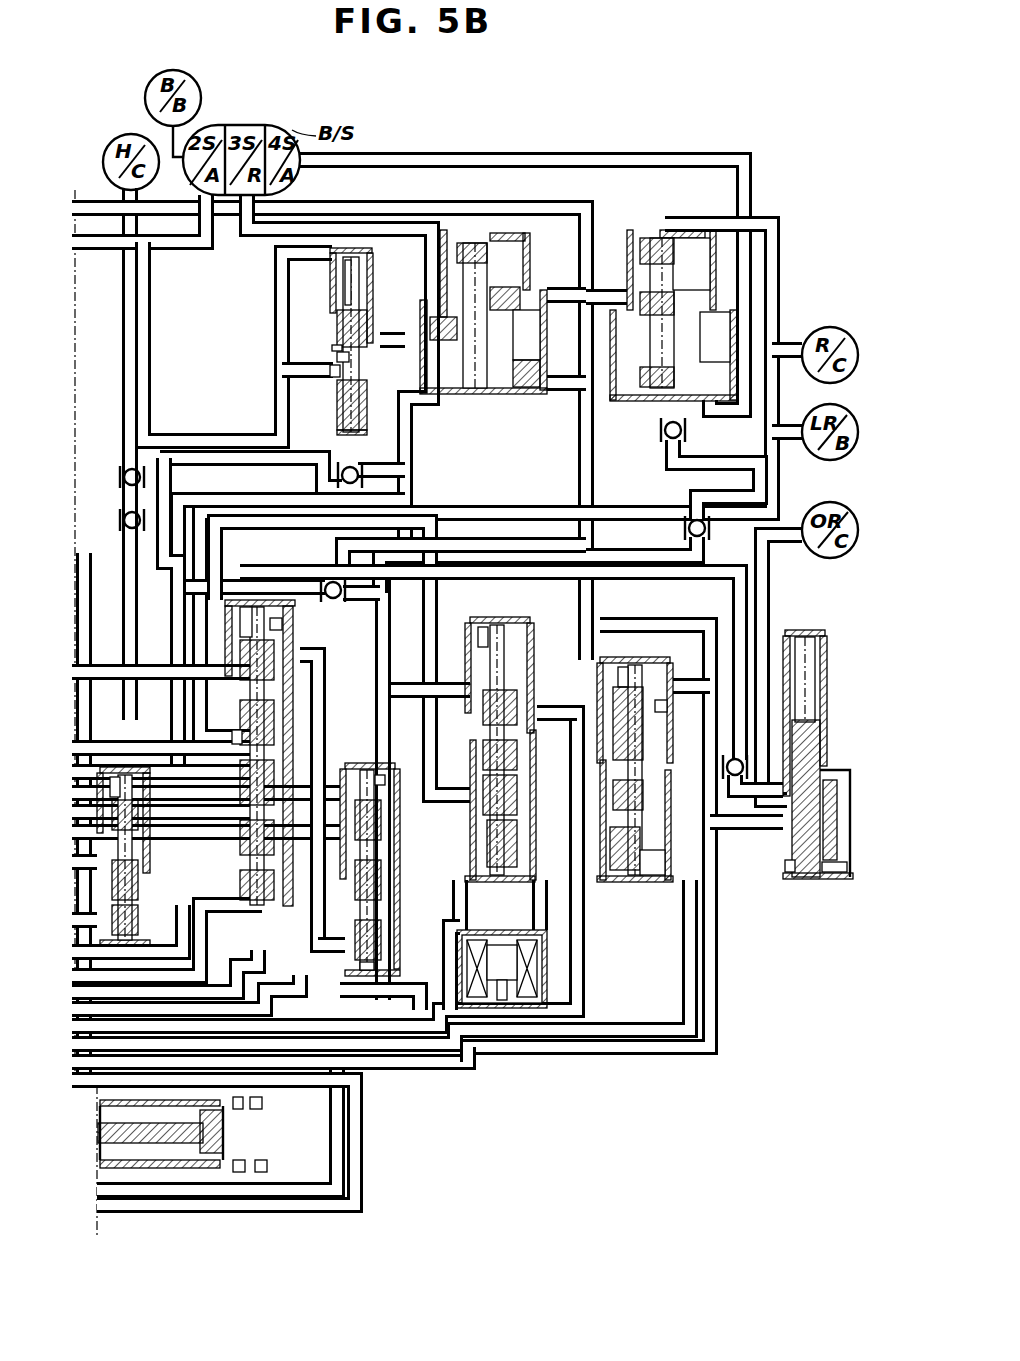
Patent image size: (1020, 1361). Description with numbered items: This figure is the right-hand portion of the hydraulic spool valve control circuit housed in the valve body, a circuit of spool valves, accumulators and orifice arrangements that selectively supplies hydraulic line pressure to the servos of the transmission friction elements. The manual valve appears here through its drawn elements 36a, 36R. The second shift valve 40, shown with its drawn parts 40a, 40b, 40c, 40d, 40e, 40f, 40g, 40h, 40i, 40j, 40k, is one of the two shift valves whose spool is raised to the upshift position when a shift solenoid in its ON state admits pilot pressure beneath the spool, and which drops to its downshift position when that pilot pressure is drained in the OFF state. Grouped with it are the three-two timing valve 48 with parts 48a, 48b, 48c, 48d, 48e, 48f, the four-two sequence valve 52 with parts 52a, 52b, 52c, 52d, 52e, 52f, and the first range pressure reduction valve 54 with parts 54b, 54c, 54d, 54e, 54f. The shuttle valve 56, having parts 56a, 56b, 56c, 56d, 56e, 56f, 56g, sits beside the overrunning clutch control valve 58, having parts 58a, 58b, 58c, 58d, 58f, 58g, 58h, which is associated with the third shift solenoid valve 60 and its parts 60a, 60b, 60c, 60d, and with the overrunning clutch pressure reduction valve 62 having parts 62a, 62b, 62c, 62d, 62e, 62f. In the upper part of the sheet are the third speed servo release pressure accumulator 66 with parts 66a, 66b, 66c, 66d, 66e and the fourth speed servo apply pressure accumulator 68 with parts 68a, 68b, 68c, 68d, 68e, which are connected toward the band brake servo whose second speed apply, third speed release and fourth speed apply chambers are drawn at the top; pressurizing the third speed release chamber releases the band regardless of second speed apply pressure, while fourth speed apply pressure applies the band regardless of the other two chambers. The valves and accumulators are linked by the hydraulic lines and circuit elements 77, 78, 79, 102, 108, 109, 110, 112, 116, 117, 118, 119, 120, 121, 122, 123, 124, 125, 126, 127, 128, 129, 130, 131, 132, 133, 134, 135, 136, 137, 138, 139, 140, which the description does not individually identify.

The accumulator piston 36a is at (225, 1132).
The accumulator spring chamber 36R is at (255, 1162).
The second shift valve 40 is at (272, 750).
The manual valve port 40a is at (252, 607).
The manual valve port 40b is at (285, 627).
The manual valve port 40c is at (274, 905).
The manual valve port 40d is at (90, 674).
The manual valve land 40e is at (290, 705).
The manual valve port 40f is at (232, 737).
The manual valve land 40g is at (292, 760).
The manual valve port 40h is at (90, 772).
The manual valve port 40i is at (90, 813).
The manual valve land 40j is at (280, 665).
The manual valve port 40k is at (90, 748).
The 3-2 timing valve 48 is at (301, 339).
The shift valve spool 48a is at (343, 262).
The shift valve land 48b is at (338, 330).
The shift valve port 48c is at (333, 347).
The shift valve port 48d is at (337, 358).
The shift valve land 48e is at (338, 405).
The shift valve port 48f is at (330, 372).
The 4-2 sequence valve 52 is at (144, 851).
The valve port 52a is at (112, 778).
The valve port 52b is at (90, 921).
The valve port 52c is at (90, 864).
The valve land 52d is at (108, 896).
The valve port 52e is at (90, 954).
The valve land 52f is at (250, 862).
The control valve 54 is at (366, 853).
The valve port 54b is at (90, 794).
The valve port 54c is at (310, 978).
The valve land 54d is at (382, 960).
The valve port 54e is at (90, 834).
The valve spring seat 54f is at (367, 968).
The shuttle valve 56 is at (503, 735).
The valve port 56a is at (348, 750).
The valve land 56b is at (480, 660).
The valve end 56c is at (475, 876).
The valve land 56d is at (522, 700).
The valve port 56e is at (455, 790).
The valve port 56f is at (455, 694).
The valve spool 56g is at (478, 630).
The overrunning clutch control valve 58 is at (645, 761).
The valve spool 58a is at (632, 665).
The valve port 58b is at (690, 686).
The valve chamber 58c is at (650, 882).
The valve port 58d is at (592, 615).
The valve land 58f is at (660, 876).
The valve land 58g is at (615, 876).
The valve port 58h is at (675, 700).
The third shift solenoid valve 60 is at (549, 951).
The solenoid coil 60a is at (547, 975).
The solenoid plunger 60b is at (510, 1003).
The solenoid coil 60c is at (538, 958).
The solenoid armature 60d is at (502, 945).
The overrunning clutch pressure reduction valve 62 is at (800, 773).
The valve spool 62a is at (815, 655).
The valve land 62b is at (812, 720).
The valve port 62c is at (787, 862).
The valve plug 62d is at (830, 790).
The valve port 62e is at (770, 795).
The valve port 62f is at (828, 876).
The third speed servo release pressure accumulator 66 is at (500, 315).
The valve land 66a is at (520, 292).
The valve land 66b is at (482, 393).
The valve chamber 66c is at (528, 338).
The valve cap 66d is at (528, 250).
The valve land 66e is at (445, 395).
The fourth speed servo apply pressure accumulator 68 is at (722, 295).
The valve land 68a is at (680, 300).
The valve port 68b is at (575, 390).
The valve chamber 68c is at (720, 340).
The valve cap 68d is at (700, 255).
The valve port 68e is at (648, 350).
The drain line 77 is at (138, 1205).
The line pressure passage 78 is at (415, 208).
The passage 79 is at (462, 1068).
The passage 102 is at (205, 1033).
The passage 108 is at (325, 946).
The passage 109 is at (546, 915).
The passage 110 is at (462, 905).
The passage 112 is at (410, 1001).
The passage 116 is at (684, 1030).
The passage 117 is at (207, 950).
The passage 118 is at (123, 390).
The check valve 119 is at (122, 474).
The check valve 120 is at (122, 518).
The passage 121 is at (187, 440).
The check valve 122 is at (340, 483).
The passage 123 is at (282, 392).
The passage 124 is at (222, 462).
The passage 125 is at (100, 628).
The passage 126 is at (247, 583).
The check valve 127 is at (330, 580).
The passage 128 is at (780, 238).
The check valve 129 is at (705, 540).
The passage 130 is at (660, 463).
The passage 131 is at (322, 667).
The passage 132 is at (280, 975).
The passage 133 is at (388, 665).
The passage 134 is at (545, 710).
The passage 135 is at (590, 160).
The check valve 136 is at (690, 428).
The passage 137 is at (742, 828).
The passage 138 is at (767, 607).
The check valve 139 is at (735, 758).
The passage 140 is at (716, 1027).